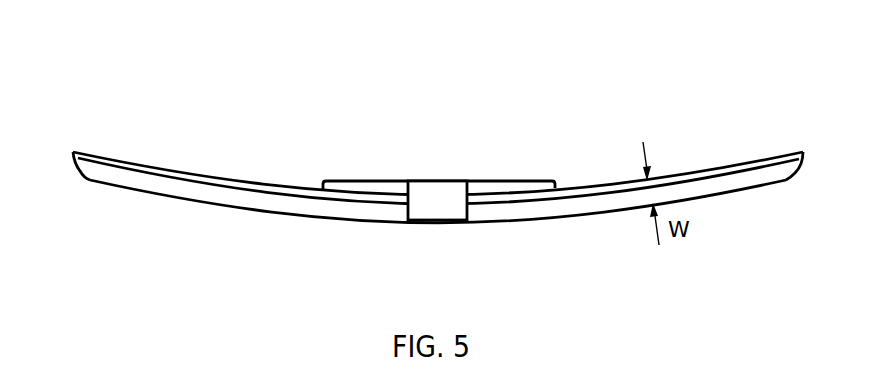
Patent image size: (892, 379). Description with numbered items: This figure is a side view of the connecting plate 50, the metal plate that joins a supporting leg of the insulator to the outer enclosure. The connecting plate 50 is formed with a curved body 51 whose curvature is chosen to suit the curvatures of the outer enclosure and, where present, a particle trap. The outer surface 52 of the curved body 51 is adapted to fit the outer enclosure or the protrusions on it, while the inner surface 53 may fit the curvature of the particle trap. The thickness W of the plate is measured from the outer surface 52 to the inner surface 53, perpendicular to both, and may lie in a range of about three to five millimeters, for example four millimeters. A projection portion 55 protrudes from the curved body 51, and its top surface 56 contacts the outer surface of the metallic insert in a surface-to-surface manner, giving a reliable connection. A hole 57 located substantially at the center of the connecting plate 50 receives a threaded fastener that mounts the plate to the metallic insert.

The connecting plate 50 is at (248, 91).
The curved body 51 is at (140, 172).
The outer surface 52 is at (725, 201).
The inner surface 53 is at (784, 153).
The projection portion 55 is at (533, 187).
The top surface 56 is at (370, 178).
The hole 57 is at (443, 204).